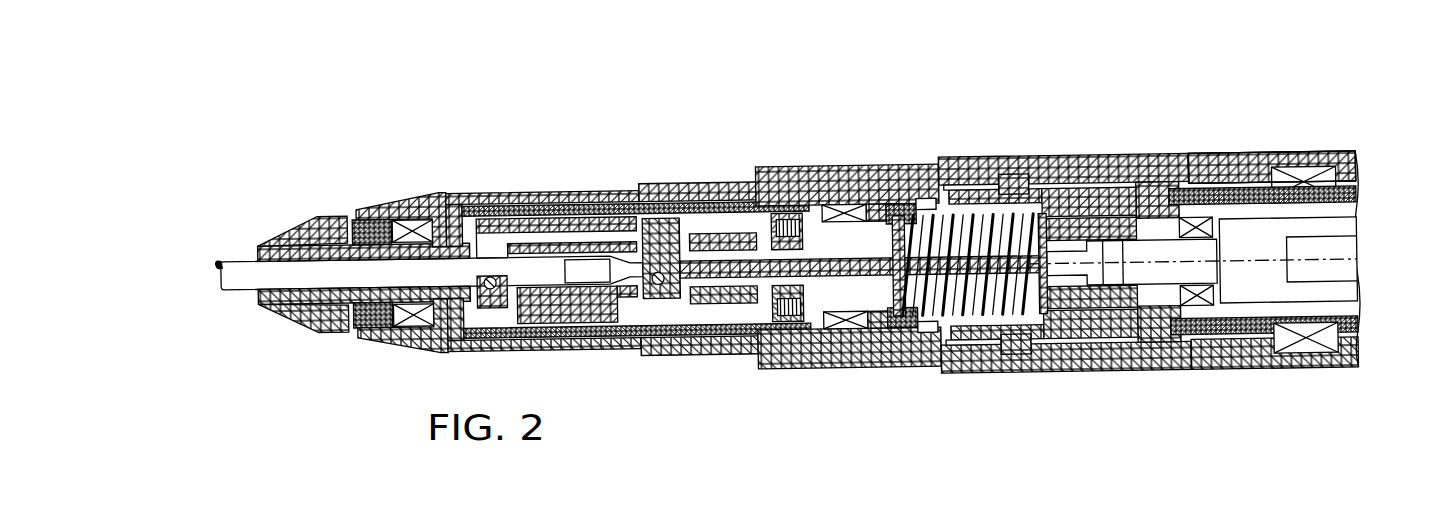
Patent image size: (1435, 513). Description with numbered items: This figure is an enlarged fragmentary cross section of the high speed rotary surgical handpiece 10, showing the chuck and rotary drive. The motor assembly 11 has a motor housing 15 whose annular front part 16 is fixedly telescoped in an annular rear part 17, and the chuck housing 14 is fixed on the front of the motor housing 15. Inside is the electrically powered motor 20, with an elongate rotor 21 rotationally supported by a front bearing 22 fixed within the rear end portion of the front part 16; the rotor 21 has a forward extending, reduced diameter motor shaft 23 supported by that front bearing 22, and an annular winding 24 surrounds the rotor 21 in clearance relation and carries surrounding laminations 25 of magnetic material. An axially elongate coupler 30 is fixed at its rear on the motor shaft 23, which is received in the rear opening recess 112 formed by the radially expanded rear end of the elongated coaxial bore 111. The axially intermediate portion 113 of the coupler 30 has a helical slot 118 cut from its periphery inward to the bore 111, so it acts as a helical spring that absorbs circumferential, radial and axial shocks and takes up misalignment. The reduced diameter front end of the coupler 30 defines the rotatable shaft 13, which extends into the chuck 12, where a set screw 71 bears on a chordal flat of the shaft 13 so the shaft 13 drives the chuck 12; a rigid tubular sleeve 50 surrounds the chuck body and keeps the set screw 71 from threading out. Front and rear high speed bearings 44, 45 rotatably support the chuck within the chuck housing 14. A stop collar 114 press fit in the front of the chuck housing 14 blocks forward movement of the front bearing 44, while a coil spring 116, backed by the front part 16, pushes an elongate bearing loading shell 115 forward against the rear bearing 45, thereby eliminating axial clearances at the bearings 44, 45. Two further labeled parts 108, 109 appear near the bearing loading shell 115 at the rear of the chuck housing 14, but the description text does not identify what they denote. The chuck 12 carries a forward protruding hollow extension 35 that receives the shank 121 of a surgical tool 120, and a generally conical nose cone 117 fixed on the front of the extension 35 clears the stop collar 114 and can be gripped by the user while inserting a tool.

The high speed rotary surgical handpiece 10 is at (1350, 122).
The motor assembly 11 is at (1308, 150).
The chuck 12 is at (680, 200).
The rotatable shaft 13 is at (827, 200).
The chuck housing 14 is at (960, 152).
The motor housing 15 is at (1233, 152).
The front part 16 is at (1019, 176).
The rear part 17 is at (1253, 158).
The motor 20 is at (1340, 198).
The rotor 21 is at (1318, 231).
The front bearing 22 is at (1190, 218).
The motor shaft 23 is at (1130, 322).
The winding 24 is at (1354, 317).
The laminations 25 is at (1338, 352).
The coupler 30 is at (1075, 219).
The extension 35 is at (307, 250).
The front bearing 44 is at (409, 198).
The rear bearing 45 is at (858, 212).
The sleeve 50 is at (568, 211).
The set screw 71 is at (778, 232).
The spacer 108 is at (940, 198).
The ring 109 is at (982, 203).
The bore 111 is at (1070, 310).
The recess 112 is at (1165, 272).
The intermediate portion 113 is at (927, 305).
The stop collar 114 is at (366, 222).
The bearing loading shell 115 is at (903, 203).
The coil spring 116 is at (988, 197).
The nose cone 117 is at (287, 238).
The helical slot 118 is at (968, 310).
The surgical tool 120 is at (213, 261).
The shank 121 is at (236, 262).